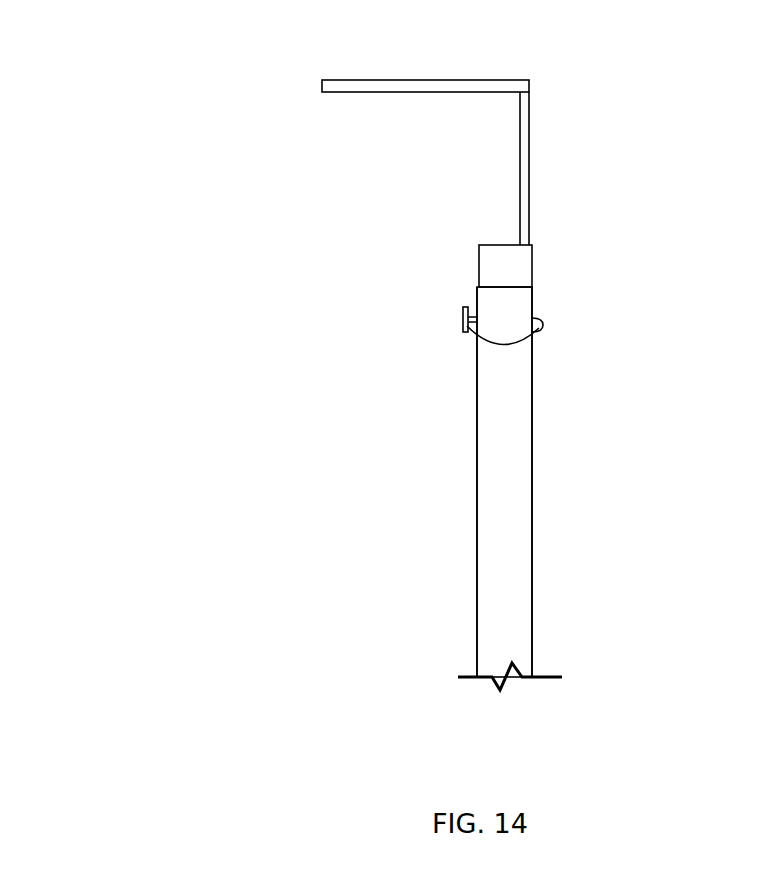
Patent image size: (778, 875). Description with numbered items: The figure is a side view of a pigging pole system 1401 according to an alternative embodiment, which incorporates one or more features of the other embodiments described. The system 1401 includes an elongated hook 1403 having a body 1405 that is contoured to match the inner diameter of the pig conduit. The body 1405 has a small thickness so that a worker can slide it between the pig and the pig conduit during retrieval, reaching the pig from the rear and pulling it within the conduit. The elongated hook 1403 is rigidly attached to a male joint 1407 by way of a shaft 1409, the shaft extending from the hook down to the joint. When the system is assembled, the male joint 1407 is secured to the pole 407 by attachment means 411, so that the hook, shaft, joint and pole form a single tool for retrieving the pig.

The pigging pole system 1401 is at (160, 425).
The elongated hook 1403 is at (394, 131).
The body 1405 is at (462, 80).
The male joint 1407 is at (532, 268).
The shaft 1409 is at (529, 172).
The pole 407 is at (530, 543).
The attachment means 411 is at (568, 342).